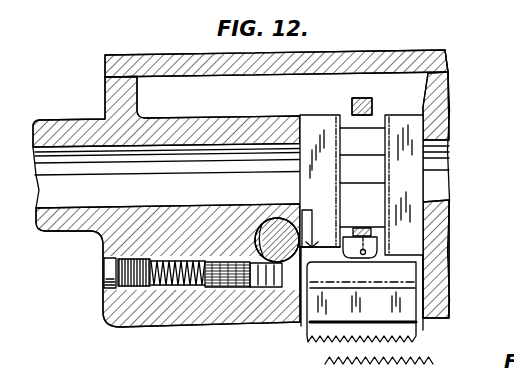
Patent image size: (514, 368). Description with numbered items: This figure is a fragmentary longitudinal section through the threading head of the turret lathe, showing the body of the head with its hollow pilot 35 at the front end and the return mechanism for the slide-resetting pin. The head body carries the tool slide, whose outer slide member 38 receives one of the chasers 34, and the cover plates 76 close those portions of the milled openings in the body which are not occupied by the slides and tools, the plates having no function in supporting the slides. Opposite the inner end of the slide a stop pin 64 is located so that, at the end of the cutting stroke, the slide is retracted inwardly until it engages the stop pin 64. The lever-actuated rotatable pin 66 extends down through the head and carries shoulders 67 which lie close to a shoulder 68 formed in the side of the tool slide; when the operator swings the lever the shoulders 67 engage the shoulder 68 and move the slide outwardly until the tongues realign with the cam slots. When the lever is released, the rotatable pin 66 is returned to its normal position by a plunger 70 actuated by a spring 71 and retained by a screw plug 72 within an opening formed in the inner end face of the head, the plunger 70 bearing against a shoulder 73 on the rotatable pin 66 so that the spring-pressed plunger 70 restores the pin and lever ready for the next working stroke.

The chasers 34 is at (428, 364).
The hollow pilot 35 is at (58, 231).
The outer slide member 38 is at (414, 190).
The stop pin 64 is at (374, 104).
The rotatable pin 66 is at (283, 208).
The shoulders 67 is at (313, 238).
The shoulder 68 is at (311, 246).
The plunger 70 is at (246, 288).
The spring 71 is at (184, 287).
The screw plug 72 is at (103, 287).
The shoulder 73 is at (293, 292).
The cover plates 76 is at (206, 59).